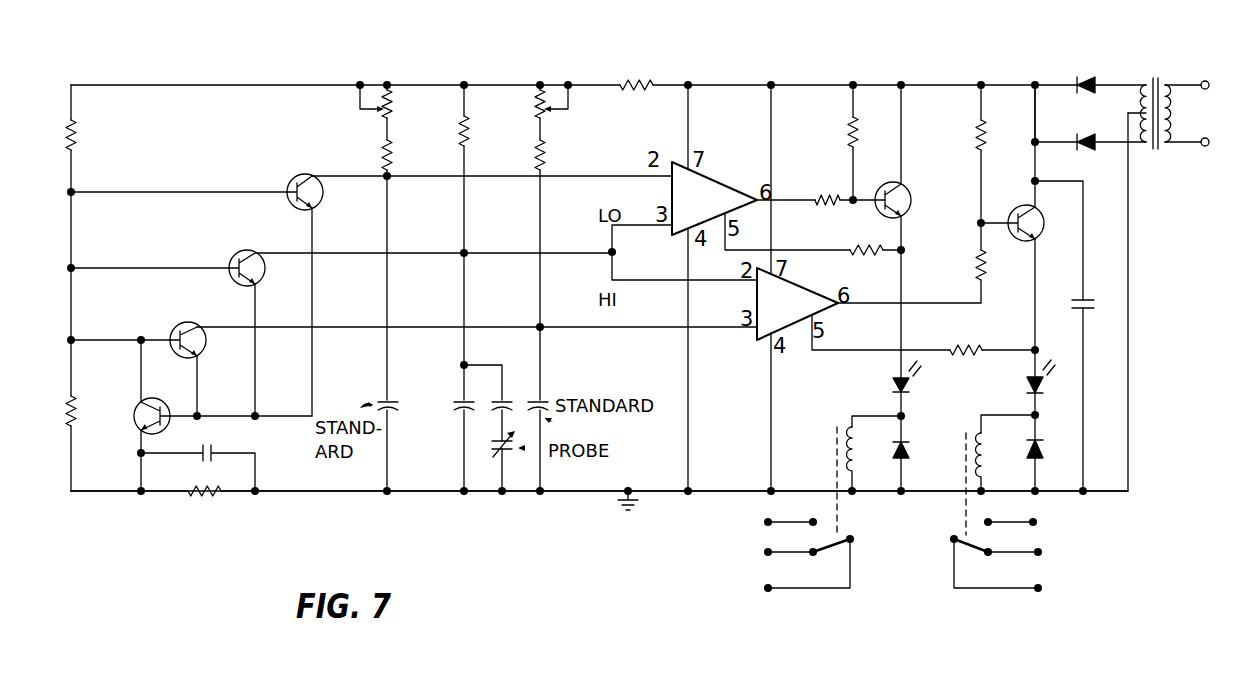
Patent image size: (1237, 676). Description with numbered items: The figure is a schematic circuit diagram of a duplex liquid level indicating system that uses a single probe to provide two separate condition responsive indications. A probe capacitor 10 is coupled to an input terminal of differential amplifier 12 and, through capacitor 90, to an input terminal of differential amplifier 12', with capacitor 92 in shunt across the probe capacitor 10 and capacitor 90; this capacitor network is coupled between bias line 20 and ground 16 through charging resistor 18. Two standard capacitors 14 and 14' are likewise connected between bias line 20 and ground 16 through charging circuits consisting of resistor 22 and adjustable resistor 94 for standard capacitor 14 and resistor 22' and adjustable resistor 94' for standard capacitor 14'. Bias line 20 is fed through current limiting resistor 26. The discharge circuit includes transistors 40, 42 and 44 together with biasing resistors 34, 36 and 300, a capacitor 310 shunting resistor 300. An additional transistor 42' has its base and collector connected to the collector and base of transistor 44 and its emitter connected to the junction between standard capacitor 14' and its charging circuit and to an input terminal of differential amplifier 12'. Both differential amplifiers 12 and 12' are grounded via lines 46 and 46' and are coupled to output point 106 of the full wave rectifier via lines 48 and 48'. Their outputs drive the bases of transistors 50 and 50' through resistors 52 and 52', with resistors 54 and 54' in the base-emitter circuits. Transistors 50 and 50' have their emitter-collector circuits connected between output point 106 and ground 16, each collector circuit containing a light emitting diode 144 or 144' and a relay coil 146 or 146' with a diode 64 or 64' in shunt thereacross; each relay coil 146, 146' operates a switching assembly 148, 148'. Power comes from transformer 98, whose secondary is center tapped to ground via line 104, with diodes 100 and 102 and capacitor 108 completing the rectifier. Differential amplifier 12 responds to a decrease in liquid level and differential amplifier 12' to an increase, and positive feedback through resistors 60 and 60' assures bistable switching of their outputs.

The bias line 20 is at (268, 85).
The resistor 34 is at (80, 135).
The resistor 36 is at (65, 405).
The transistor 42' is at (302, 174).
The transistor 40 is at (240, 252).
The transistor 42 is at (184, 322).
The transistor 44 is at (135, 414).
The capacitor 310 is at (215, 450).
The biasing resistor 300 is at (200, 494).
The adjustable resistor 94' is at (400, 101).
The resistor 22' is at (415, 154).
The charging resistor 18 is at (470, 130).
The adjustable resistor 94 is at (536, 85).
The resistor 22 is at (566, 150).
The current limiting resistor 26 is at (635, 82).
The differential amplifier 12' is at (720, 194).
The differential amplifier 12 is at (781, 319).
The line 48' is at (726, 127).
The line 48 is at (803, 165).
The line 46' is at (716, 359).
The line 46 is at (798, 412).
The resistor 54' is at (830, 146).
The resistor 52' is at (828, 221).
The transistor 50' is at (919, 185).
The resistor 60' is at (872, 266).
The output point 106 is at (1035, 82).
The diode 100 is at (1081, 84).
The diode 102 is at (1081, 140).
The transformer 98 is at (1155, 80).
The resistor 54 is at (1002, 123).
The transistor 50 is at (1032, 216).
The resistor 52 is at (1003, 267).
The resistor 60 is at (979, 331).
The capacitor 108 is at (1095, 299).
The line 104 is at (1130, 360).
The ground 16 is at (563, 494).
The light emitting diode 144' is at (874, 376).
The diode 64' is at (927, 458).
The relay coil 146' is at (846, 470).
The light emitting diode 144 is at (1057, 368).
The diode 64 is at (1053, 453).
The relay coil 146 is at (995, 458).
The switching assembly 148' is at (809, 575).
The switching assembly 148 is at (990, 575).
The standard capacitor 14' is at (408, 385).
The capacitor 92 is at (458, 400).
The capacitor 90 is at (508, 398).
The standard capacitor 14 is at (554, 386).
The probe capacitor 10 is at (497, 456).